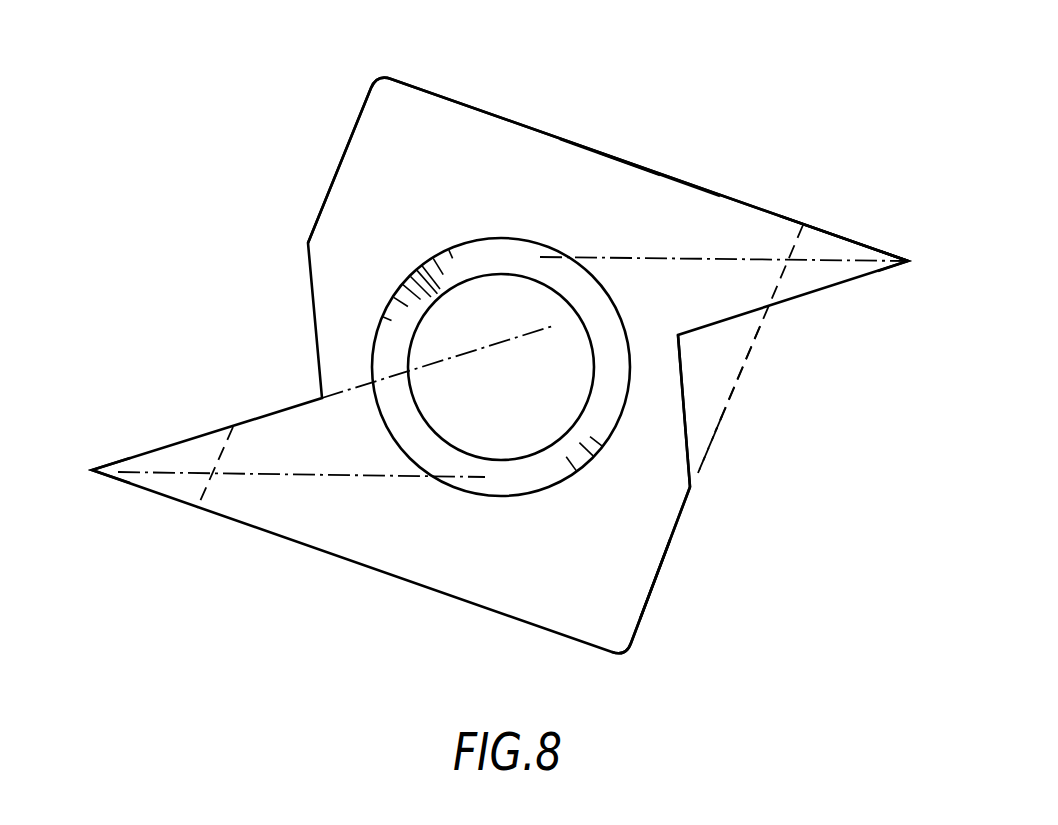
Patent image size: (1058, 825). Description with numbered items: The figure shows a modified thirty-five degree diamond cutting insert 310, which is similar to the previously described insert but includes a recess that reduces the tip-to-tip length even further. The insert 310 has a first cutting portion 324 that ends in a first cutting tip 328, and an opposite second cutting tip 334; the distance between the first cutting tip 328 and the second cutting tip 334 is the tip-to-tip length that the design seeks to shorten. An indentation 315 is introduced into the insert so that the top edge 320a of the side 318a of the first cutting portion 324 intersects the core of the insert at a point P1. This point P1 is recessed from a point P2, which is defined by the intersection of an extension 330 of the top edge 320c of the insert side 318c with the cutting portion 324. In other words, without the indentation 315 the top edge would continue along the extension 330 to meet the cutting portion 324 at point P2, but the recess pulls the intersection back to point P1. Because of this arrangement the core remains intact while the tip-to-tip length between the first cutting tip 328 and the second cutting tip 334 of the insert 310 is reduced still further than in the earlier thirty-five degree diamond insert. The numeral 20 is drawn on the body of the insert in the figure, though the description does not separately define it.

The cutting insert body 20 is at (450, 115).
The cutting insert 310 is at (205, 220).
The side 318a is at (608, 148).
The insert side 318c is at (650, 587).
The top edge 320a is at (646, 170).
The top edge 320c is at (660, 567).
The first cutting portion 324 is at (822, 243).
The first cutting tip 328 is at (903, 252).
The second cutting tip 334 is at (92, 476).
The indentation 315 is at (727, 372).
The extension 330 is at (710, 445).
The point P1 is at (679, 350).
The point P2 is at (767, 306).